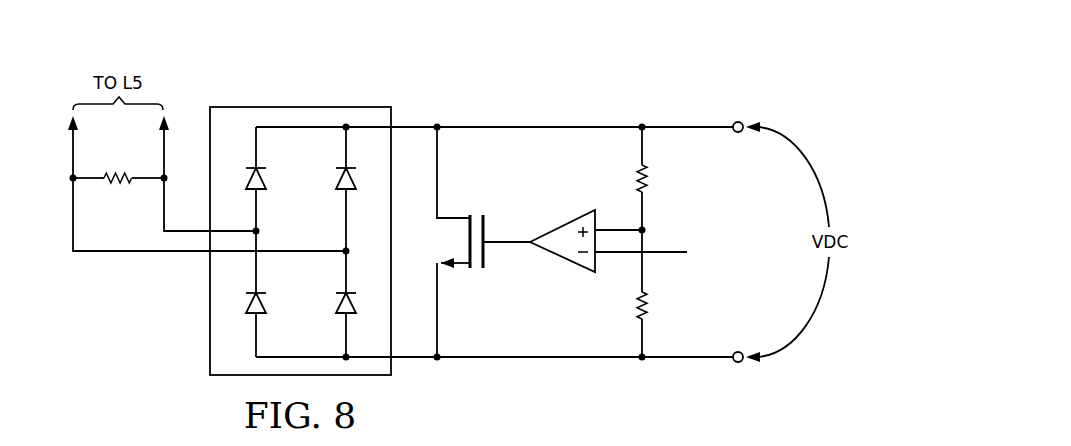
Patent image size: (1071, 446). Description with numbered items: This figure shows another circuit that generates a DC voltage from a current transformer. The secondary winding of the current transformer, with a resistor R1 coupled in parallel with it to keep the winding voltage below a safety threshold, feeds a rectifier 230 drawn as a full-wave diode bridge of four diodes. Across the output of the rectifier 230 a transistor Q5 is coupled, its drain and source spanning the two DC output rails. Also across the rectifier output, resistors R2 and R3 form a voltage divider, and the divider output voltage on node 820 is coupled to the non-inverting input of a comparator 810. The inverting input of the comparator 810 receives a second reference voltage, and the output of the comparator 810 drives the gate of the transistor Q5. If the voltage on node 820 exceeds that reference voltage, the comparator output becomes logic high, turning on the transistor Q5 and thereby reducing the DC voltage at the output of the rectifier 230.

The rectifier 230 is at (276, 102).
The comparator 810 is at (561, 226).
The node 820 is at (648, 228).
The transistor Q5 is at (471, 242).
The resistor R1 is at (119, 165).
The resistor R2 is at (656, 178).
The resistor R3 is at (656, 293).